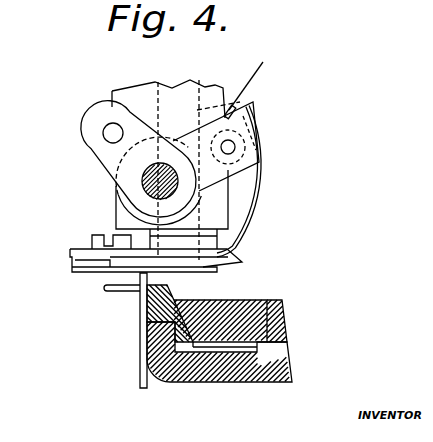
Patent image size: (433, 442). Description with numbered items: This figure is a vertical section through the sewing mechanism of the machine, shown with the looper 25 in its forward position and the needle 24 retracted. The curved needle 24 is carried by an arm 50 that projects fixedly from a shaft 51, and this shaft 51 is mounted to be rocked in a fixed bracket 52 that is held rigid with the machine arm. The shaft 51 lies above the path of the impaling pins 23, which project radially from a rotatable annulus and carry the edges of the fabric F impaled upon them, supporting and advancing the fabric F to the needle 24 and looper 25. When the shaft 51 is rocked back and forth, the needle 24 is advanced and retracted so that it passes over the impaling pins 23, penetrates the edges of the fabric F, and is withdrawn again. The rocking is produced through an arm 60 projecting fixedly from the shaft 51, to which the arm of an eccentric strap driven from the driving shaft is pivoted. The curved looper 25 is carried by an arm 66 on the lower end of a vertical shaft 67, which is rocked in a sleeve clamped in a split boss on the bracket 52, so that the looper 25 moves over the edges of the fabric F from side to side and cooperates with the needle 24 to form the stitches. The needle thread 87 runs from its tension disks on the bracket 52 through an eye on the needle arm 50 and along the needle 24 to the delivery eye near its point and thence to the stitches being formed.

The arm 60 is at (98, 142).
The shaft 51 is at (143, 182).
The arm 50 is at (258, 156).
The fixed bracket 52 is at (223, 88).
The needle thread 87 is at (258, 62).
The vertical shaft 67 is at (240, 102).
The needle 24 is at (262, 195).
The arm 66 is at (80, 257).
The looper 25 is at (242, 262).
The impaling pins 23 is at (107, 290).
The fabric F is at (140, 350).